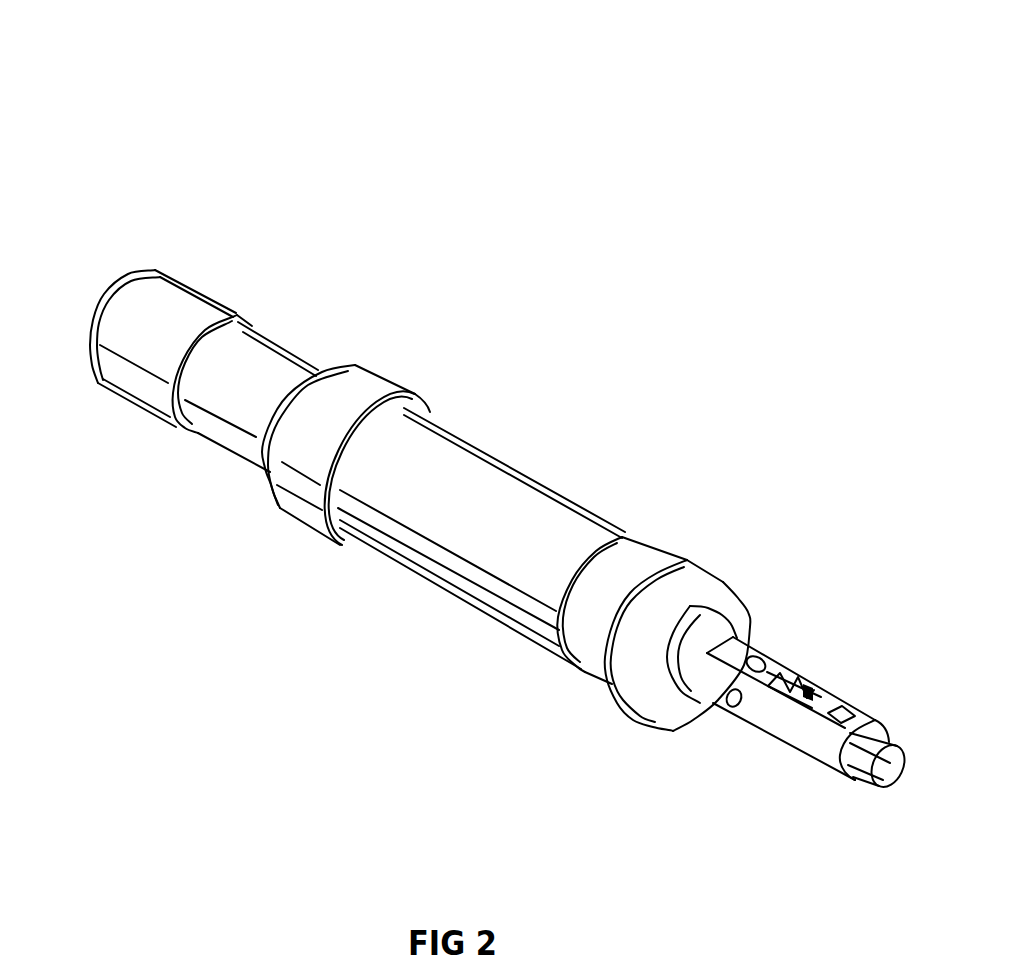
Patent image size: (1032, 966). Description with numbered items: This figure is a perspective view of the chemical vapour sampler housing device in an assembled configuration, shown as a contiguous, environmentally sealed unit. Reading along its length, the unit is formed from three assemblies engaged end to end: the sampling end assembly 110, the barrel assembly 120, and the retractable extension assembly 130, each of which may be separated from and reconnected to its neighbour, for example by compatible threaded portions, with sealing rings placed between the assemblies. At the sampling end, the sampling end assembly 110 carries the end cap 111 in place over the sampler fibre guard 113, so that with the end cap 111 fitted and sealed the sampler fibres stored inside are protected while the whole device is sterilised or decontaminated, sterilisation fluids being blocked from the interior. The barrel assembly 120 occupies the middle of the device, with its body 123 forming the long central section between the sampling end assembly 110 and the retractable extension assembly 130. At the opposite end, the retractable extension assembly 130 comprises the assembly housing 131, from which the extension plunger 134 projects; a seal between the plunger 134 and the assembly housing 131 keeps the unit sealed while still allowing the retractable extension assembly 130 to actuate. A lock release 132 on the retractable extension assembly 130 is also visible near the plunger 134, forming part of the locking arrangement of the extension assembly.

The sampling end assembly 110 is at (86, 128).
The end cap 111 is at (174, 298).
The sampler fibre guard 113 is at (268, 360).
The barrel assembly 120 is at (594, 474).
The body 123 is at (436, 452).
The retractable extension assembly 130 is at (684, 782).
The assembly housing 131 is at (651, 722).
The lock release 132 is at (815, 688).
The extension plunger 134 is at (883, 774).